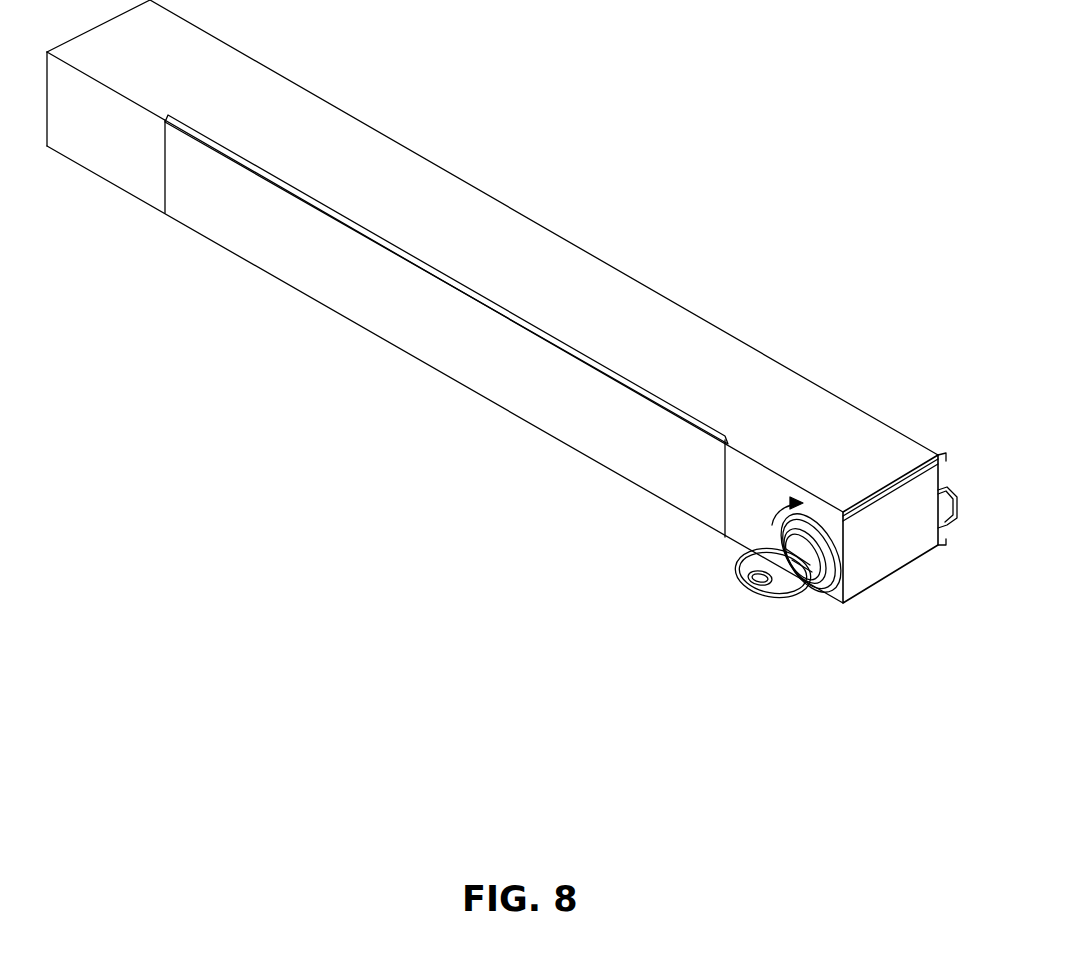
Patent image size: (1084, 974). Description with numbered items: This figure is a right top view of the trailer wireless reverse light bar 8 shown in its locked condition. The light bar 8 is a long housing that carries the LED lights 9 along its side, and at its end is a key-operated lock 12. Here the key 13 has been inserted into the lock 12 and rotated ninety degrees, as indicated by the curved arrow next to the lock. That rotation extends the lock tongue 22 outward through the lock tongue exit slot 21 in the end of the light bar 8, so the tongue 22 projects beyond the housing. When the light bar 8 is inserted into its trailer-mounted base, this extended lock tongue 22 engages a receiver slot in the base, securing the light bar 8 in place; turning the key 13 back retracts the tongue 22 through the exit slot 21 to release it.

The trailer wireless reverse light bar 8 is at (505, 195).
The LED lights 9 is at (405, 355).
The lock 12 is at (817, 515).
The key 13 is at (753, 595).
The lock tongue exit slot 21 is at (935, 523).
The lock tongue 22 is at (958, 527).